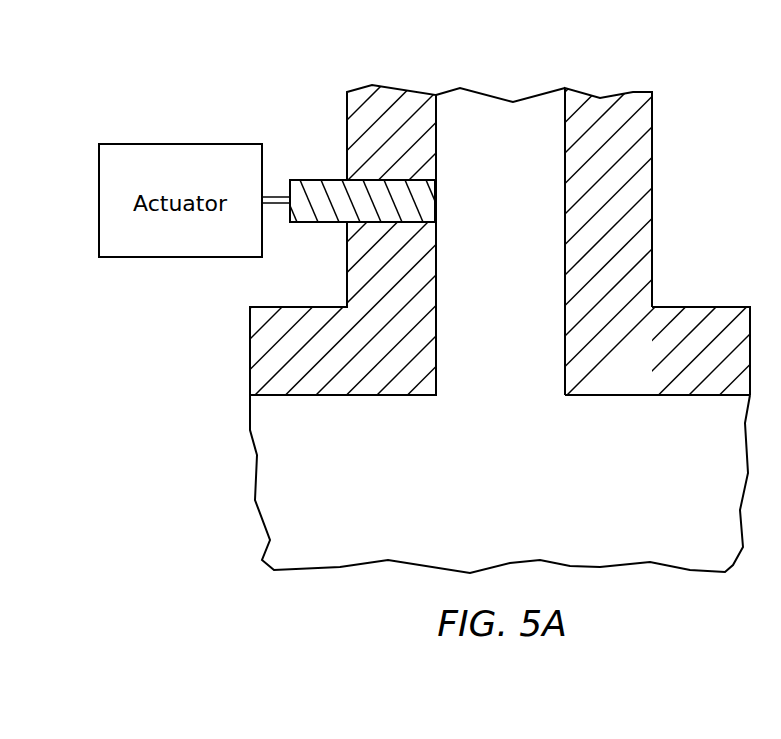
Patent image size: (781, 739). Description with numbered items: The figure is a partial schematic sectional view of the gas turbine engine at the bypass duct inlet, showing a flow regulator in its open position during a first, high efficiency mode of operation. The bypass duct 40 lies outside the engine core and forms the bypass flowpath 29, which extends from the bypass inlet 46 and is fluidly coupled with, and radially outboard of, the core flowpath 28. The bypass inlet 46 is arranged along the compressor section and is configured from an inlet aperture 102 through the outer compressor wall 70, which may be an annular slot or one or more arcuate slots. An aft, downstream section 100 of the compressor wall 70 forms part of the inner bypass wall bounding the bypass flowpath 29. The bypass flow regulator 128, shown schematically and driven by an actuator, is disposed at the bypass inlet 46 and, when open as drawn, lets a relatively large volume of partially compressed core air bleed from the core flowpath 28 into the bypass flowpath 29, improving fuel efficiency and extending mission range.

The core flowpath 28 is at (313, 512).
The bypass flowpath 29 is at (488, 120).
The bypass duct 40 is at (521, 201).
The bypass inlet 46 is at (499, 400).
The outer compressor wall 70 is at (234, 378).
The downstream section of the compressor wall 100 is at (727, 347).
The inlet aperture 102 is at (538, 395).
The bypass flow regulator 128 is at (312, 158).